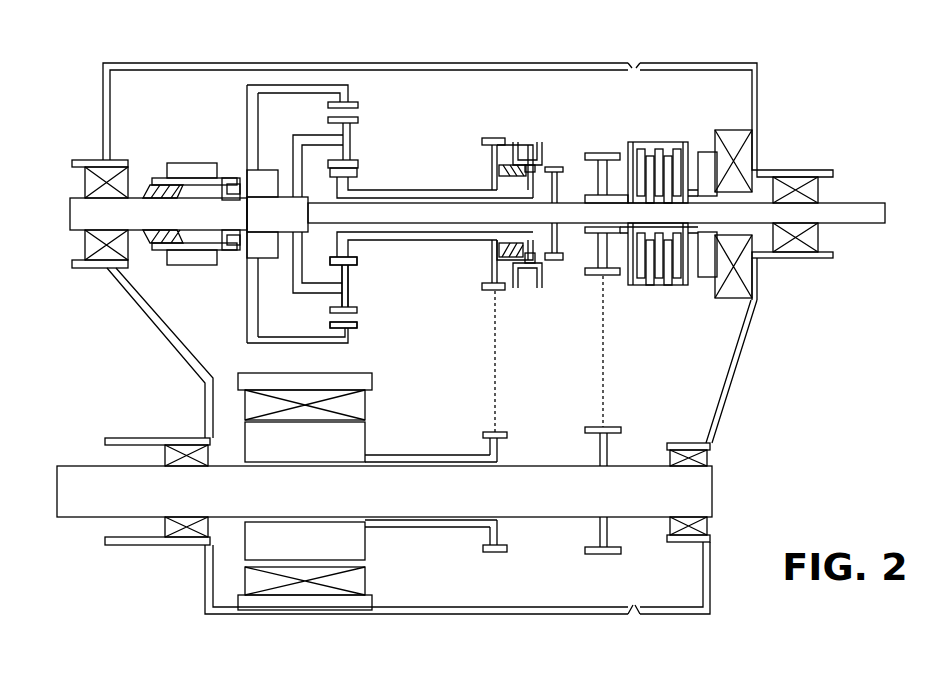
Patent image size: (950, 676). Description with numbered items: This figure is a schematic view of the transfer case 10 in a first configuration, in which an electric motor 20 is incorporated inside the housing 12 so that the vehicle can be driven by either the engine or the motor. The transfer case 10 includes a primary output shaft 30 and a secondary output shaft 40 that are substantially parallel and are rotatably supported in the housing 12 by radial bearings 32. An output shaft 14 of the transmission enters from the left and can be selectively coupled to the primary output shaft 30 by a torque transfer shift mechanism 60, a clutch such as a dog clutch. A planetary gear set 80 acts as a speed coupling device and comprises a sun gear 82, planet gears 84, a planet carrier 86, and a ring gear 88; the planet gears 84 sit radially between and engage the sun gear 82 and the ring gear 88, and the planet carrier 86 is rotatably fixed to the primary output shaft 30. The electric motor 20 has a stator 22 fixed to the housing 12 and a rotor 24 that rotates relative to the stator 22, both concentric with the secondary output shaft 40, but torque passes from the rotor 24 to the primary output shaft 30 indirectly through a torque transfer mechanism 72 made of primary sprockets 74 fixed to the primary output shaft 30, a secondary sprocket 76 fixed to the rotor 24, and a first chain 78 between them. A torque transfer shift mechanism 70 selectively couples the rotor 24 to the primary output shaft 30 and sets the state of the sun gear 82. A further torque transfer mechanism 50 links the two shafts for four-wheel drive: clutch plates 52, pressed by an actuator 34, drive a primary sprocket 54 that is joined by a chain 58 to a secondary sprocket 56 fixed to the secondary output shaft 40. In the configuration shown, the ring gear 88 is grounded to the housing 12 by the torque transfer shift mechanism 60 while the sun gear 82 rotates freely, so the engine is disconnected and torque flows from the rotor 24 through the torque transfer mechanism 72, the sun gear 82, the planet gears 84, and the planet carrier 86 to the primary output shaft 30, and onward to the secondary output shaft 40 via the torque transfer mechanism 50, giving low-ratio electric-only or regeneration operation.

The transfer case 10 is at (818, 100).
The housing 12 is at (345, 63).
The output shaft 14 is at (70, 210).
The electric motor 20 is at (397, 441).
The stator 22 is at (245, 405).
The rotor 24 is at (253, 545).
The primary output shaft 30 is at (852, 212).
The radial bearings 32 is at (85, 245).
The actuator 34 is at (752, 290).
The secondary output shaft 40 is at (90, 495).
The torque transfer mechanism 50 is at (619, 296).
The clutch plates 52 is at (660, 142).
The primary sprocket 54 is at (603, 153).
The secondary sprocket 56 is at (612, 432).
The chain 58 is at (605, 365).
The torque transfer shift mechanism 60 is at (182, 163).
The torque transfer shift mechanism 70 is at (538, 142).
The torque transfer mechanism 72 is at (479, 299).
The primary sprocket 74 is at (500, 176).
The secondary sprocket 76 is at (500, 440).
The first chain 78 is at (497, 370).
The planetary gear set 80 is at (389, 152).
The sun gear 82 is at (358, 262).
The planet gears 84 is at (348, 286).
The planet carrier 86 is at (247, 302).
The ring gear 88 is at (350, 332).